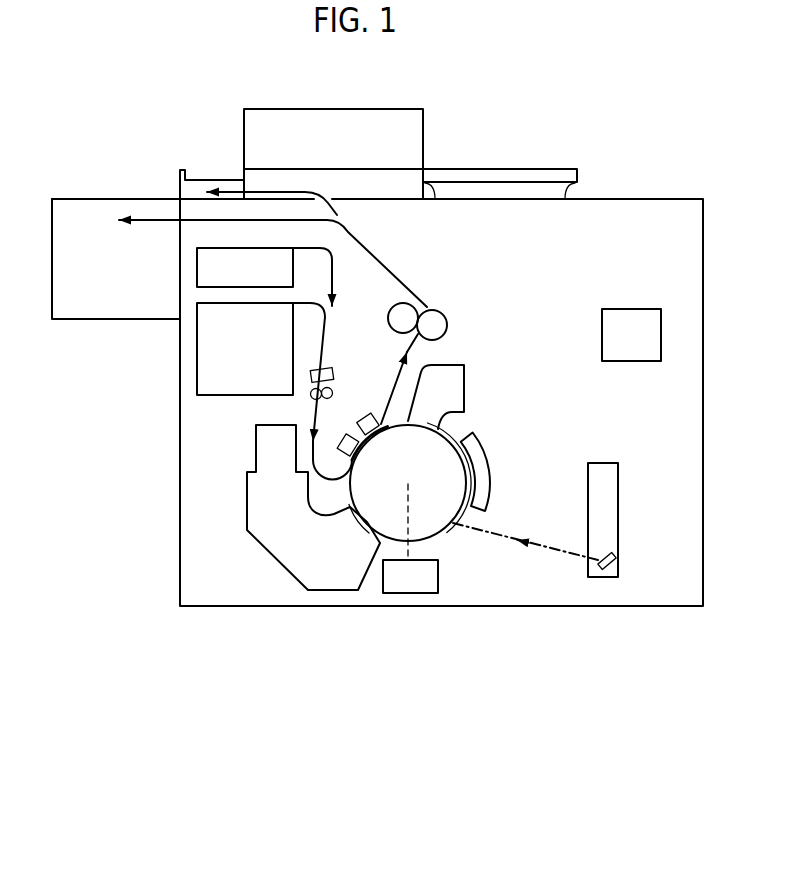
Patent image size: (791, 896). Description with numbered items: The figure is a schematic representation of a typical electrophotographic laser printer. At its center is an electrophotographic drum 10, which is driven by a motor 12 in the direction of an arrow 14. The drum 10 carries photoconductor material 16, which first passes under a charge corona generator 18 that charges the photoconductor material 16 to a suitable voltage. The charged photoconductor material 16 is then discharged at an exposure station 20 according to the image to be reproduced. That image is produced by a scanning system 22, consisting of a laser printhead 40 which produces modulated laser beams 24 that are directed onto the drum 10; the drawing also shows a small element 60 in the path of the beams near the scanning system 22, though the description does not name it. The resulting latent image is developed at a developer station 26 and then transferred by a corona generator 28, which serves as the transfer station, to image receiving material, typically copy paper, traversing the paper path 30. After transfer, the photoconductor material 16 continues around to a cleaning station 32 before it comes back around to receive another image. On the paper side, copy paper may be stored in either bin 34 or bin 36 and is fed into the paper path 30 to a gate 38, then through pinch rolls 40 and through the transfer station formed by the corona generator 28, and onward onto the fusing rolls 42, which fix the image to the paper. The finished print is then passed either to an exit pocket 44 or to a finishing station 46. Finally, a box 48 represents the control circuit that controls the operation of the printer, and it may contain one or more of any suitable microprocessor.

The electrophotographic drum 10 is at (448, 492).
The motor 12 is at (429, 584).
The arrow 14 is at (370, 464).
The photoconductor material 16 is at (462, 432).
The charge corona generator 18 is at (477, 461).
The exposure station 20 is at (450, 534).
The scanning system 22 is at (608, 503).
The modulated laser beams 24 is at (567, 552).
The developer station 26 is at (268, 533).
The corona generator 28 is at (346, 421).
The paper path 30 is at (325, 322).
The cleaning station 32 is at (447, 380).
The bin 34 is at (228, 388).
The bin 36 is at (223, 257).
The gate 38 is at (327, 363).
The pinch rolls 40 is at (308, 396).
The fusing rolls 42 is at (434, 303).
The exit pocket 44 is at (98, 207).
The finishing station 46 is at (199, 187).
The control circuit 48 is at (634, 311).
The mirror 60 is at (622, 562).